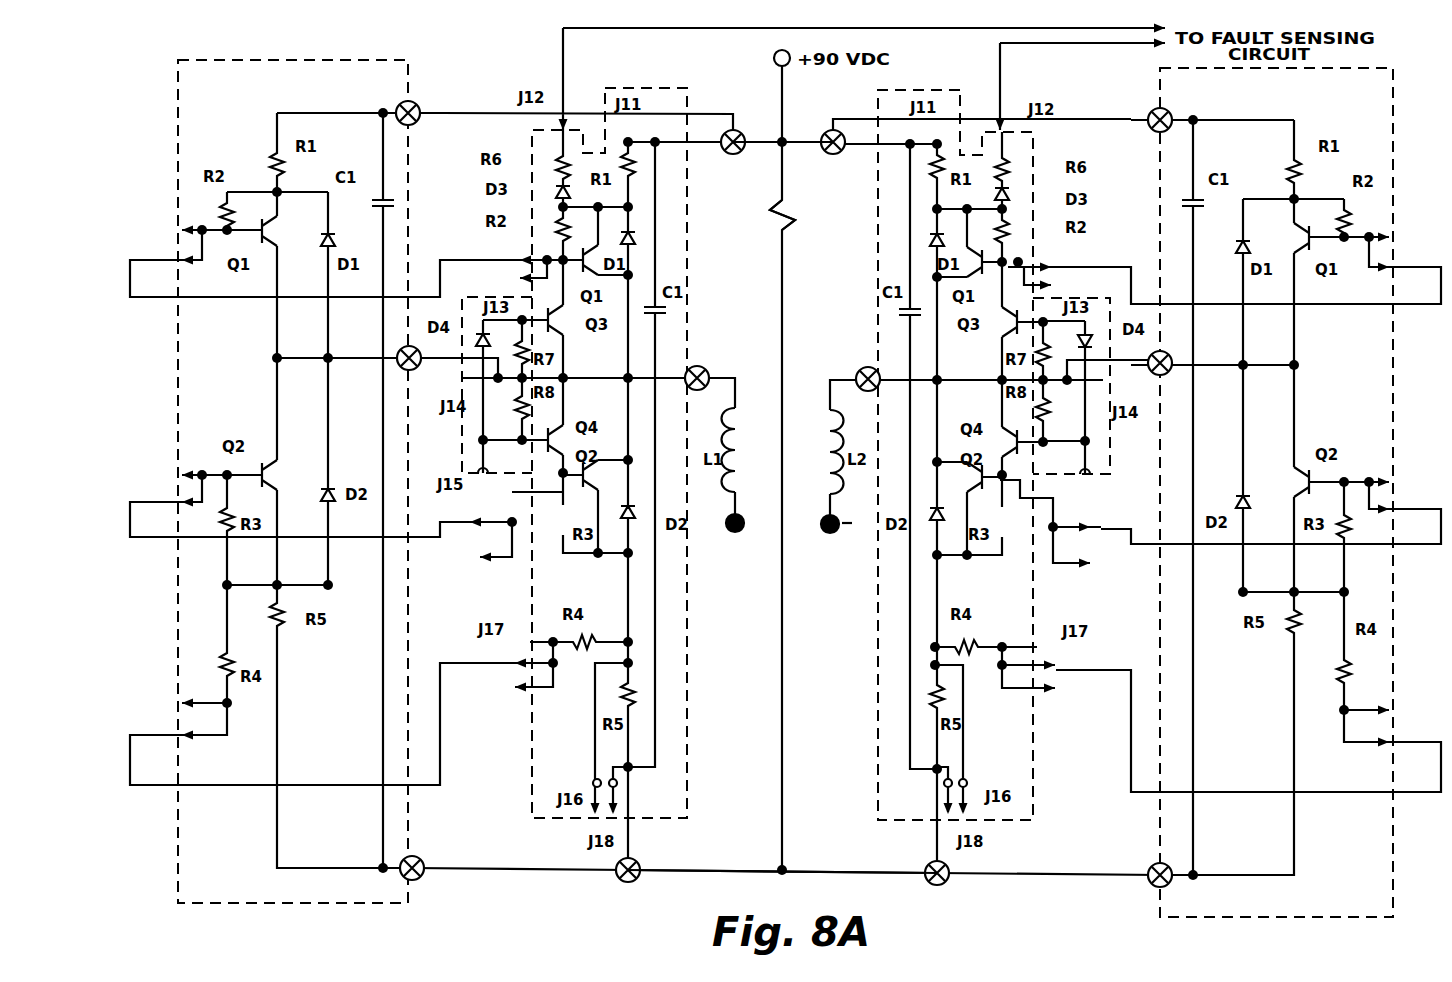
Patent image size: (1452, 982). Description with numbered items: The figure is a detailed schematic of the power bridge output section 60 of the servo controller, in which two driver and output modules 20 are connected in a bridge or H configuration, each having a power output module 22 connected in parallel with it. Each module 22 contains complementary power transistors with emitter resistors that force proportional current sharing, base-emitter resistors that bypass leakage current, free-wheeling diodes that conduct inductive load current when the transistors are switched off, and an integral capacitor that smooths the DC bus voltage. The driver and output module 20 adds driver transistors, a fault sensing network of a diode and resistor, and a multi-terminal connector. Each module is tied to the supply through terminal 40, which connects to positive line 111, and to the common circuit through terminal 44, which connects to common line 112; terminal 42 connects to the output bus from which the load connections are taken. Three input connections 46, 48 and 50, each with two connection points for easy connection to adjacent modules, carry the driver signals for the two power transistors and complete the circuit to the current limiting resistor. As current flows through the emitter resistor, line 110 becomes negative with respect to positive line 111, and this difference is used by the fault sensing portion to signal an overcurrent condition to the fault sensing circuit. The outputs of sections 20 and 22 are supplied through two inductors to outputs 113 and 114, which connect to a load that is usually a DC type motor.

The driver and output module 20 is at (1033, 814).
The power output module 22 is at (1283, 928).
The terminal 40 is at (1140, 100).
The terminal 42 is at (1142, 384).
The terminal 44 is at (1142, 894).
The input connection 46 is at (785, 269).
The input connection 48 is at (784, 518).
The input connection 50 is at (785, 726).
The power bridge output section 60 is at (1070, 932).
The line 110 is at (935, 212).
The positive line 111 is at (792, 142).
The common line 112 is at (752, 868).
The output 113 is at (739, 516).
The output 114 is at (814, 514).